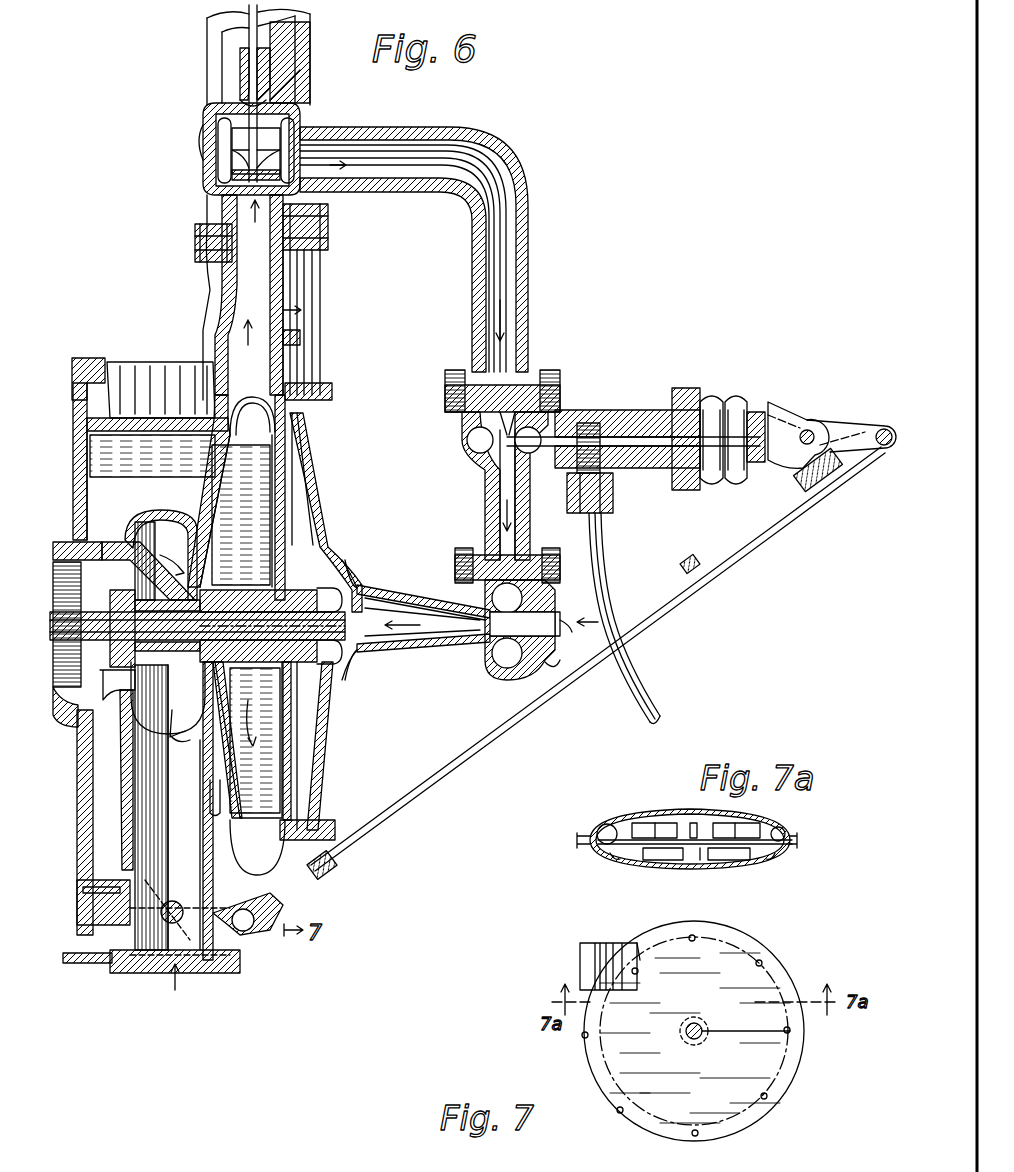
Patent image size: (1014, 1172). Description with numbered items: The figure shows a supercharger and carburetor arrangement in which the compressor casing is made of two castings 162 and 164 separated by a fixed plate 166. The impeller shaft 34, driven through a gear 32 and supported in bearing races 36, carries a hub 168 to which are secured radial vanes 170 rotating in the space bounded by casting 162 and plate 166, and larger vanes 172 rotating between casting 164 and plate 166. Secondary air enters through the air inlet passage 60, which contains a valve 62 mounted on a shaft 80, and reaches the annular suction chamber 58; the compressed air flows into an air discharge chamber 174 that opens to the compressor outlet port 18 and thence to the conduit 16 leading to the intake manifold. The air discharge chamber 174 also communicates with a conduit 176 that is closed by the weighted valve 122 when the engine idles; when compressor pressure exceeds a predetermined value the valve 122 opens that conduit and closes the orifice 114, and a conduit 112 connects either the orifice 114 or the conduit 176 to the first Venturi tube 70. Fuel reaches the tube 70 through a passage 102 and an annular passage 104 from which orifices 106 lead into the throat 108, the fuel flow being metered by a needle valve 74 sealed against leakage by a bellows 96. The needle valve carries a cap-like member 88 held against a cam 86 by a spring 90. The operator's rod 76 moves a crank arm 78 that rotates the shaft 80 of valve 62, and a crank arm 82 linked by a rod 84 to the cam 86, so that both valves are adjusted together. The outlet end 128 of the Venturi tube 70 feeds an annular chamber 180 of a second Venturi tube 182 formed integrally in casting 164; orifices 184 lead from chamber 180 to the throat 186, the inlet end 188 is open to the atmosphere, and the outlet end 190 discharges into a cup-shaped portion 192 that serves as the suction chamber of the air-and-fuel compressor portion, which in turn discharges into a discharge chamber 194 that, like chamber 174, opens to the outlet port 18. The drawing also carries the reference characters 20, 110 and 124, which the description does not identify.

In FIG. 6, the conduit 16 is at (218, 70).
In FIG. 6, the compressor outlet port 18 is at (305, 286).
In FIG. 7A, the compressor outlet port 18 is at (585, 835).
In FIG. 7, the compressor outlet port 18 is at (612, 940).
In FIG. 6, the hose 20 is at (672, 712).
In FIG. 6, the gear 32 is at (75, 728).
In FIG. 6, the impeller shaft 34 is at (165, 720).
In FIG. 7, the impeller shaft 34 is at (795, 1031).
In FIG. 6, the bearing races 36 is at (88, 542).
In FIG. 6, the annular suction chamber 58 is at (150, 433).
In FIG. 6, the air inlet passage 60 is at (140, 816).
In FIG. 6, the valve 62 is at (165, 880).
In FIG. 6, the first Venturi tube 70 is at (477, 505).
In FIG. 6, the needle valve 74 is at (655, 440).
In FIG. 6, the rod 76 is at (95, 968).
In FIG. 6, the crank arm 78 is at (150, 968).
In FIG. 6, the shaft 80 is at (172, 900).
In FIG. 6, the crank arm 82 is at (232, 935).
In FIG. 6, the rod 84 is at (385, 830).
In FIG. 6, the cam 86 is at (785, 410).
In FIG. 6, the cap-like member 88 is at (758, 410).
In FIG. 6, the spring 90 is at (708, 482).
In FIG. 6, the bellows 96 is at (716, 398).
In FIG. 6, the passage 102 is at (566, 425).
In FIG. 6, the annular passage 104 is at (560, 405).
In FIG. 6, the orifices 106 is at (545, 400).
In FIG. 6, the throat 108 is at (525, 388).
In FIG. 6, the flange 110 is at (472, 368).
In FIG. 6, the conduit 112 is at (532, 162).
In FIG. 6, the orifice 114 is at (262, 95).
In FIG. 6, the valve 122 is at (228, 150).
In FIG. 6, the cap 124 is at (305, 26).
In FIG. 6, the outlet end 128 is at (525, 482).
In FIG. 6, the casting 162 is at (225, 478).
In FIG. 7A, the casting 162 is at (710, 815).
In FIG. 6, the casting 164 is at (317, 500).
In FIG. 7A, the casting 164 is at (668, 871).
In FIG. 6, the fixed plate 166 is at (287, 470).
In FIG. 7A, the fixed plate 166 is at (700, 869).
In FIG. 7, the fixed plate 166 is at (640, 1102).
In FIG. 6, the hub 168 is at (345, 664).
In FIG. 6, the radial vanes 170 is at (241, 607).
In FIG. 7A, the radial vanes 170 is at (668, 811).
In FIG. 6, the vanes 172 is at (300, 532).
In FIG. 7A, the vanes 172 is at (740, 861).
In FIG. 6, the air discharge chamber 174 is at (246, 846).
In FIG. 7A, the air discharge chamber 174 is at (620, 821).
In FIG. 6, the conduit 176 is at (225, 286).
In FIG. 6, the annular chamber 180 is at (503, 665).
In FIG. 6, the second Venturi tube 182 is at (458, 650).
In FIG. 6, the orifices 184 is at (565, 615).
In FIG. 6, the throat 186 is at (462, 602).
In FIG. 6, the inlet end 188 is at (570, 655).
In FIG. 6, the outlet end 190 is at (385, 598).
In FIG. 6, the cup-shaped portion 192 is at (333, 560).
In FIG. 6, the discharge chamber 194 is at (322, 386).
In FIG. 7A, the discharge chamber 194 is at (786, 859).